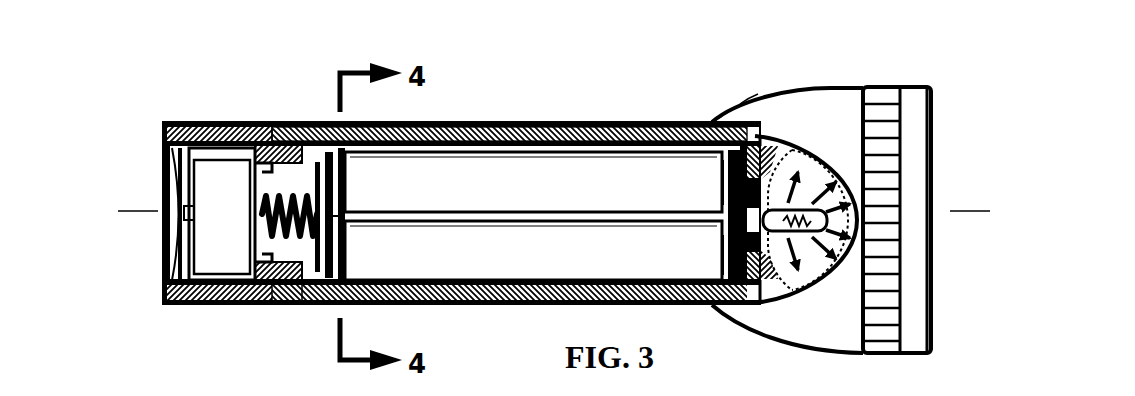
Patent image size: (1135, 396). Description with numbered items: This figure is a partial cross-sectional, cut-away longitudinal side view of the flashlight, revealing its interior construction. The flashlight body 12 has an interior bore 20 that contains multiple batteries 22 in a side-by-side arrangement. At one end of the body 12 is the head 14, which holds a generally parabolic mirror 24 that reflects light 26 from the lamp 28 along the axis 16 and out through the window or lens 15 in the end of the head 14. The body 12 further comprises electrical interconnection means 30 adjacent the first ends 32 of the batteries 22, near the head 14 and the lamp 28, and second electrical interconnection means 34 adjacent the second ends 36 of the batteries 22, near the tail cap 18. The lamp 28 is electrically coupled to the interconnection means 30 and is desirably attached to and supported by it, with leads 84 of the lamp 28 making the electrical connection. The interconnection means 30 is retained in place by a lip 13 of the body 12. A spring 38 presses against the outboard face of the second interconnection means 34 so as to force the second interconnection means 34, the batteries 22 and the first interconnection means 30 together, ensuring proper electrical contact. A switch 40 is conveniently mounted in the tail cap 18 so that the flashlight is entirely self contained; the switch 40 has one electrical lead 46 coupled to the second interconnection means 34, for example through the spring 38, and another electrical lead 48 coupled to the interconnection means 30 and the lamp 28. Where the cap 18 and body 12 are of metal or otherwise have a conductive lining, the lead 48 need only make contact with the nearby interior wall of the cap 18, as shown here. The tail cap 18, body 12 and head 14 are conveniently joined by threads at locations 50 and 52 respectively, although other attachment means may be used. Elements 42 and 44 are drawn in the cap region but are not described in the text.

The flashlight body 12 is at (578, 124).
The lip 13 is at (768, 152).
The head 14 is at (797, 90).
The window or lens 15 is at (935, 120).
The axis 16 is at (135, 210).
The tail cap 18 is at (196, 122).
The interior bore 20 is at (480, 126).
The batteries 22 is at (533, 216).
The parabolic mirror 24 is at (795, 150).
The light 26 is at (822, 185).
The lamp 28 is at (825, 268).
The electrical interconnection means 30 is at (718, 252).
The first ends of batteries 32 is at (718, 98).
The second electrical interconnection means 34 is at (348, 226).
The second ends of batteries 36 is at (304, 314).
The spring 38 is at (243, 305).
The switch 40 is at (222, 214).
The switch contact 42 is at (194, 213).
The contact plate 44 is at (176, 238).
The electrical lead 46 is at (270, 230).
The electrical lead 48 is at (287, 142).
The thread location 50 is at (316, 108).
The thread location 52 is at (748, 86).
The lamp leads 84 is at (705, 208).